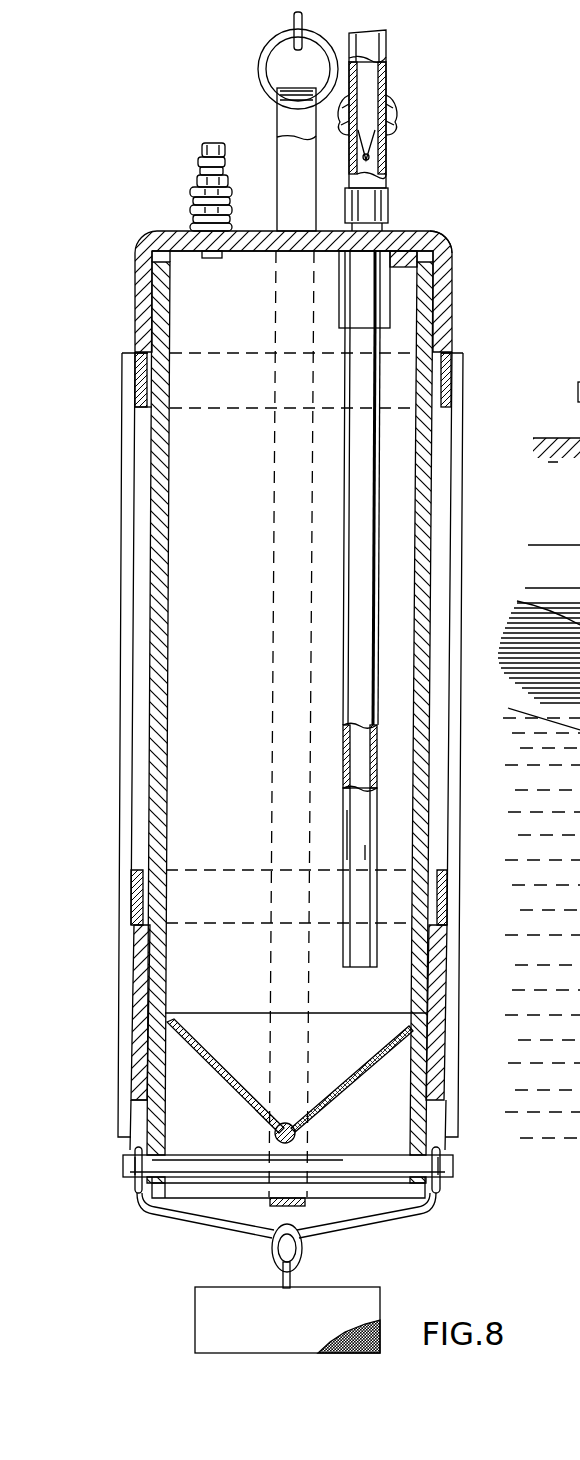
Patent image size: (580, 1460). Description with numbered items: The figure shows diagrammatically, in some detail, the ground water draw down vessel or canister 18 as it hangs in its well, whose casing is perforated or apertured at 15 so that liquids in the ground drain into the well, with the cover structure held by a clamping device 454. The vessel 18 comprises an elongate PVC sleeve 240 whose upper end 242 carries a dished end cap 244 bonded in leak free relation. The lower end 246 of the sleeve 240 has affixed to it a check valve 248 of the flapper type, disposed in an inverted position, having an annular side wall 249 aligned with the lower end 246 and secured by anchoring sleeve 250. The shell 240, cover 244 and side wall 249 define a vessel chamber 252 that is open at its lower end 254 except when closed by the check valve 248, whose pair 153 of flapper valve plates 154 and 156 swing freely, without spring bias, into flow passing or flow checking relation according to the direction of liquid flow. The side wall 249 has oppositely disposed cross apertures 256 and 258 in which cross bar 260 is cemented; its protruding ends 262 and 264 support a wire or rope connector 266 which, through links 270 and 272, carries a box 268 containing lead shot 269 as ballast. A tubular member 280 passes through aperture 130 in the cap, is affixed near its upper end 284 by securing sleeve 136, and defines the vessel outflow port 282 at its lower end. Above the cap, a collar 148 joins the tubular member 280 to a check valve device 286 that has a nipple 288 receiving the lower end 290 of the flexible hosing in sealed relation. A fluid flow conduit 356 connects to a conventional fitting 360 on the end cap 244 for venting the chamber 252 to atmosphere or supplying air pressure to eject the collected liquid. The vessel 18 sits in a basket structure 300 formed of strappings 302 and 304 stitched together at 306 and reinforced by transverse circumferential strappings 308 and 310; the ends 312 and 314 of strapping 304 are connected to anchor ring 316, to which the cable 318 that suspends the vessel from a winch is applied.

The draw down vessel or canister 18 is at (128, 238).
The perforations or apertures 15 is at (579, 1085).
The end cap aperture 130 is at (372, 275).
The securing sleeve 136 is at (441, 248).
The collar 148 is at (385, 200).
The pair of flapper valve plates 153 is at (371, 70).
The flapper valve plate 154 is at (348, 1088).
The flapper valve plate 156 is at (230, 1088).
The elongate sleeve 240 is at (432, 470).
The upper end of sleeve 242 is at (428, 303).
The end cap 244 is at (454, 244).
The lower end of sleeve 246 is at (438, 993).
The check valve 248 is at (186, 1070).
The annular side wall 249 is at (425, 1070).
The anchoring sleeve 250 is at (143, 995).
The vessel chamber 252 is at (203, 682).
The lower end of vessel chamber 254 is at (175, 1120).
The cross aperture 256 is at (413, 1167).
The cross aperture 258 is at (153, 1200).
The cross bar 260 is at (217, 1165).
The end of cross bar 262 is at (128, 1165).
The end of cross bar 264 is at (437, 1193).
The connector 266 is at (160, 1217).
The box 268 is at (277, 1340).
The lead shot 269 is at (365, 1353).
The link 270 is at (273, 1250).
The link 272 is at (275, 1280).
The tubular member 280 is at (362, 518).
The vessel outflow port 282 is at (345, 975).
The upper end of tubular member 284 is at (382, 347).
The check valve device 286 is at (424, 131).
The nipple 288 is at (382, 100).
The lower end of flexible piping or hosing 290 is at (386, 62).
The basket structure 300 is at (103, 422).
The strapping 302 is at (120, 516).
The strapping 304 is at (275, 189).
The stitching 306 is at (305, 1205).
The transverse circumferential strapping 308 is at (448, 377).
The transverse circumferential strapping 310 is at (440, 902).
The end of strapping 312 is at (292, 88).
The end of strapping 314 is at (277, 155).
The anchor ring 316 is at (267, 50).
The cable 318 is at (294, 22).
The fluid flow conduit or connector 356 is at (222, 183).
The fitting 360 is at (210, 262).
The hold down or clamping device 454 is at (570, 390).